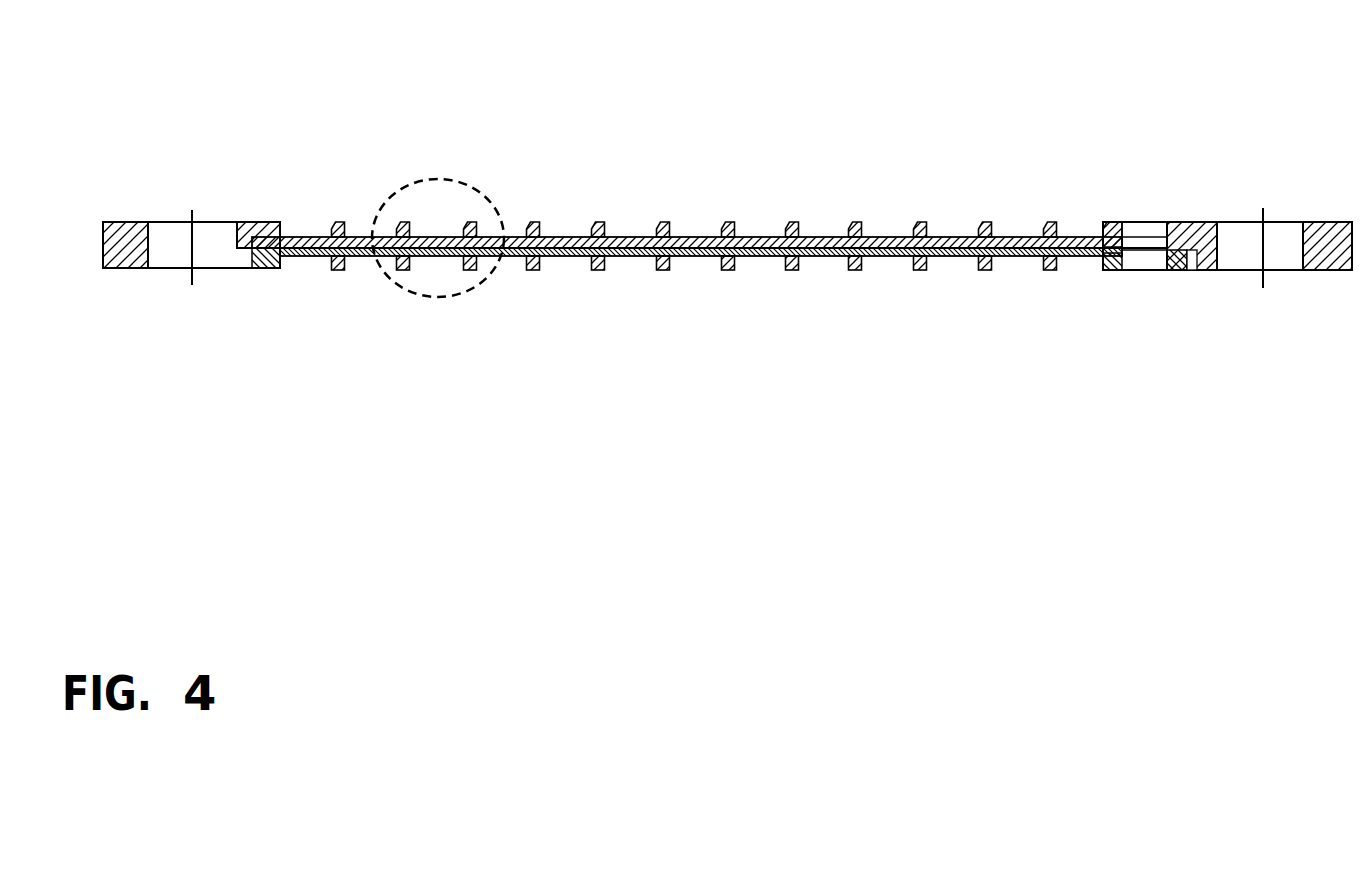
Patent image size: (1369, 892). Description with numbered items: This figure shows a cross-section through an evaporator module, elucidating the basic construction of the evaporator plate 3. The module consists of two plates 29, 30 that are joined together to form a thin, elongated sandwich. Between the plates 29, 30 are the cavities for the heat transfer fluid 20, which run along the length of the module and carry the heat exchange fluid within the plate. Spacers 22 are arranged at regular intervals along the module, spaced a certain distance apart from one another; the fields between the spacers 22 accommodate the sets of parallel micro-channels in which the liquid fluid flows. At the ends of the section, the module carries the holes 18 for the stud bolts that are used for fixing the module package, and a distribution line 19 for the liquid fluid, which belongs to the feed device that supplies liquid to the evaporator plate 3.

The evaporator plate 3 is at (824, 170).
The holes for stud bolts 18 is at (210, 248).
The distribution line 19 is at (1145, 218).
The cavities for the heat transfer fluid 20 is at (563, 248).
The spacers 22 is at (537, 222).
The plate 29 is at (692, 248).
The plate 30 is at (680, 250).